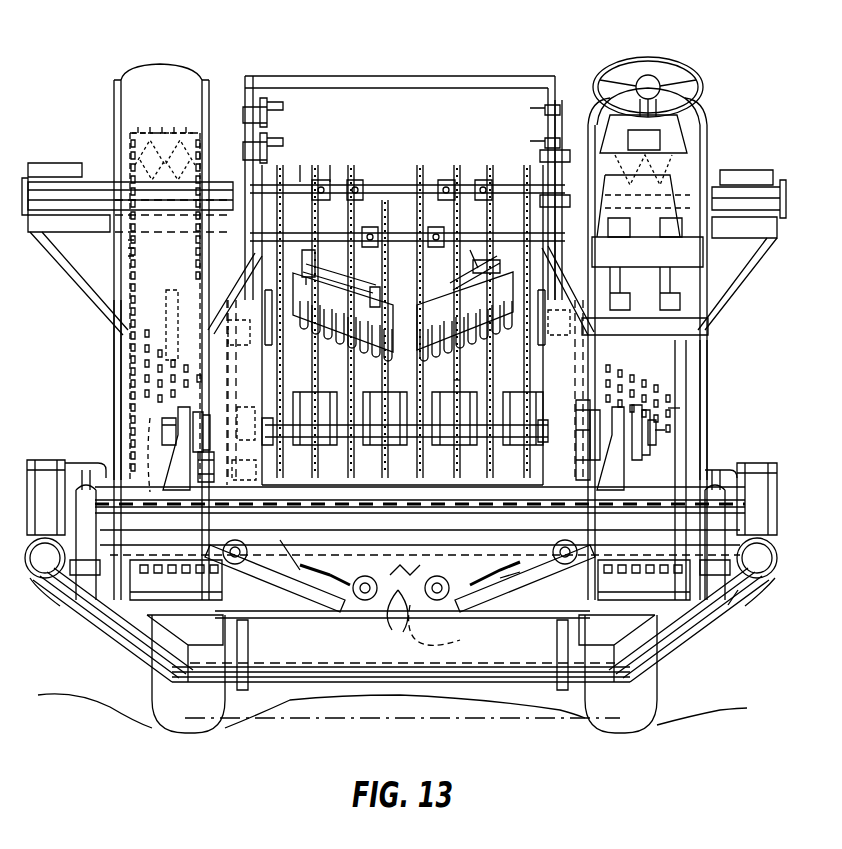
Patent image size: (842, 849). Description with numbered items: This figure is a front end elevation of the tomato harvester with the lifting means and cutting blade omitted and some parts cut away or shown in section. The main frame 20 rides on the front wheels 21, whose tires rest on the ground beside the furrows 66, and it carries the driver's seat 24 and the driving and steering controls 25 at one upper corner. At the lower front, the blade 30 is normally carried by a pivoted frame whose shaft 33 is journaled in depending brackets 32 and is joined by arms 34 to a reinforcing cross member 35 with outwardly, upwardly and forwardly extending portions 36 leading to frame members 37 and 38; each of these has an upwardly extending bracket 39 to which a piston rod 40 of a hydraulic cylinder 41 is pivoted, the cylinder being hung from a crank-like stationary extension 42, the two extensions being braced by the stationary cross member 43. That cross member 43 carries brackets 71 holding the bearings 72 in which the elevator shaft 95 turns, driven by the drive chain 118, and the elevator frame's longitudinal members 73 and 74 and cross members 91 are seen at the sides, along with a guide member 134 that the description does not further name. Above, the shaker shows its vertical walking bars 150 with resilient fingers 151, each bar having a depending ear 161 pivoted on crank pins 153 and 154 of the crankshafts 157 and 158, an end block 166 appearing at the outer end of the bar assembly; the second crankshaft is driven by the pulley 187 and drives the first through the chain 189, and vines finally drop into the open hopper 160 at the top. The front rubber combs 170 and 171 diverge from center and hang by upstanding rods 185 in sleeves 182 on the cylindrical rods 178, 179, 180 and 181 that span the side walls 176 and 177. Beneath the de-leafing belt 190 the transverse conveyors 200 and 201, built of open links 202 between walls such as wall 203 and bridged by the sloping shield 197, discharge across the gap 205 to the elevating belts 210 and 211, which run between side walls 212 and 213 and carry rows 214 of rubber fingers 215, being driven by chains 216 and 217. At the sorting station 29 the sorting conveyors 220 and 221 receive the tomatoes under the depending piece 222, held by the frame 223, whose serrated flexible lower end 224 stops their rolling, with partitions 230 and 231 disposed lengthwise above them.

The main frame 20 is at (696, 468).
The front wheels 21 is at (186, 728).
The driver's seat 24 is at (720, 120).
The driving and steering controls 25 is at (594, 62).
The sorting station 29 is at (84, 108).
The blade 30 is at (368, 722).
The depending brackets 32 is at (256, 636).
The shaft 33 is at (368, 643).
The arms 34 is at (252, 688).
The reinforcing cross member 35 is at (434, 684).
The outwardly, upwardly, and forwardly extending portions 36 is at (104, 632).
The forwardly extending frame member 37 is at (770, 578).
The forwardly extending frame member 38 is at (32, 578).
The upwardly extending bracket 39 is at (46, 520).
The piston rod 40 is at (88, 466).
The hydraulic cylinder 41 is at (76, 530).
The crank-like stationary extension 42 is at (735, 605).
The stationary cross member 43 is at (470, 498).
The furrows 66 is at (142, 722).
The brackets 71 is at (389, 449).
The bearings 72 is at (176, 424).
The longitudinally extending member 73 is at (216, 458).
The longitudinally extending member 74 is at (596, 412).
The cross members 91 is at (75, 556).
The rotatable shaft 95 is at (162, 430).
The drive chain 118 is at (660, 430).
The guide 134 is at (578, 410).
The walking bars 150 is at (420, 378).
The resilient fingers 151 is at (452, 380).
The crank pin 153 is at (515, 395).
The crank pin 154 is at (498, 450).
The crankshaft 157 is at (241, 392).
The crankshaft 158 is at (570, 268).
The open hopper 160 is at (438, 95).
The depending ear 161 is at (302, 394).
The end block 166 is at (305, 455).
The front comb 170 is at (340, 303).
The front comb 171 is at (474, 303).
The vertical wall 176 is at (550, 352).
The vertical wall 177 is at (262, 380).
The cylindrical rod 178 is at (402, 228).
The cylindrical rod 179 is at (420, 183).
The cylindrical rod 180 is at (282, 140).
The cylindrical rod 181 is at (292, 108).
The sleeves 182 is at (330, 178).
The upstanding rods 185 is at (328, 228).
The pulley 187 is at (175, 290).
The chain 189 is at (235, 293).
The de-leafing belt 190 is at (410, 479).
The sloping shield 197 is at (402, 566).
The transverse conveyor 200 is at (494, 538).
The transverse conveyor 201 is at (356, 542).
The open links 202 is at (304, 534).
The transverse vertical wall 203 is at (400, 622).
The gap 205 is at (208, 554).
The elevating belt 210 is at (670, 448).
The elevating belt 211 is at (128, 348).
The stationary side wall 212 is at (116, 412).
The stationary side wall 213 is at (205, 250).
The rows 214 is at (128, 256).
The rubber fingers 215 is at (148, 134).
The chain 216 is at (570, 118).
The chain 217 is at (244, 112).
The sorting conveyor 220 is at (736, 188).
The sorting conveyor 221 is at (60, 182).
The depending piece 222 is at (136, 100).
The frame 223 is at (146, 78).
The serrated and flexible lower end 224 is at (640, 180).
The partition 230 is at (732, 165).
The partition 231 is at (90, 172).